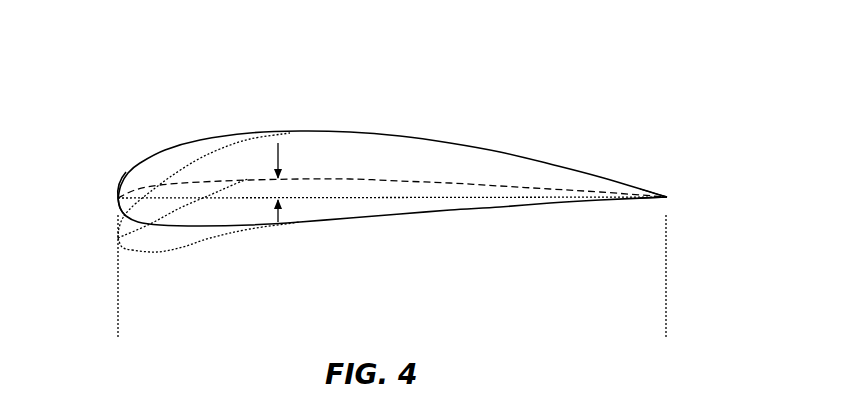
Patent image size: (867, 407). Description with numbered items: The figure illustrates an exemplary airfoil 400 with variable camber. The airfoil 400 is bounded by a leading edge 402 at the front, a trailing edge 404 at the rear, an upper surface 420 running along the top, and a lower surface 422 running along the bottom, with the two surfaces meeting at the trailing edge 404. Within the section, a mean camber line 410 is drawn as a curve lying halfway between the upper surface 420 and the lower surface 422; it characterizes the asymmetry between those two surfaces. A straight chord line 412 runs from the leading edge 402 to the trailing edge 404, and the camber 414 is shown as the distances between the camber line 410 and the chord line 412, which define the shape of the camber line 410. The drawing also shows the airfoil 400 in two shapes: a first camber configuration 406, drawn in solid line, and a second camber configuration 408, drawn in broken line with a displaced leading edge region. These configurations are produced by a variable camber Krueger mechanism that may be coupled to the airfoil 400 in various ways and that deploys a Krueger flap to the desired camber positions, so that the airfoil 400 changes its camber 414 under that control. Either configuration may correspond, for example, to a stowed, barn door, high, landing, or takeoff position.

The airfoil 400 is at (530, 52).
The leading edge 402 is at (118, 198).
The trailing edge 404 is at (667, 197).
The first camber configuration 406 is at (588, 167).
The second camber configuration 408 is at (118, 238).
The mean camber line 410 is at (385, 180).
The chord line 412 is at (397, 200).
The camber 414 is at (281, 202).
The upper surface 420 is at (210, 140).
The lower surface 422 is at (180, 228).